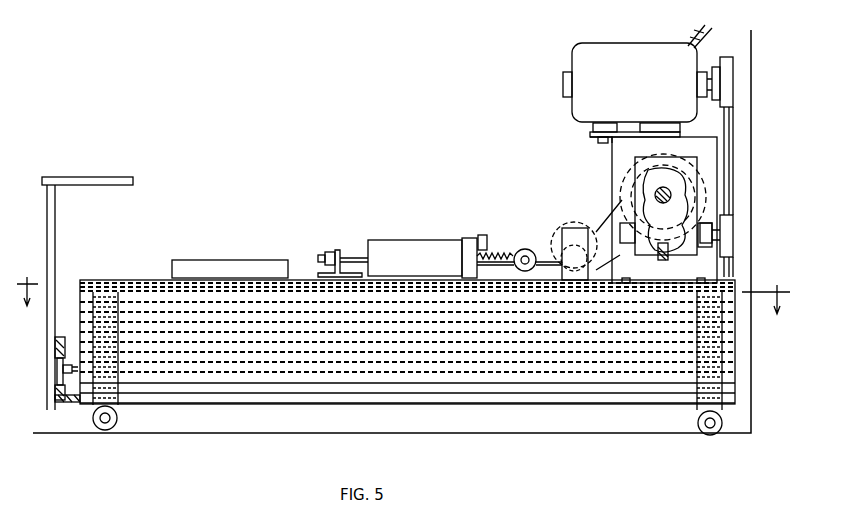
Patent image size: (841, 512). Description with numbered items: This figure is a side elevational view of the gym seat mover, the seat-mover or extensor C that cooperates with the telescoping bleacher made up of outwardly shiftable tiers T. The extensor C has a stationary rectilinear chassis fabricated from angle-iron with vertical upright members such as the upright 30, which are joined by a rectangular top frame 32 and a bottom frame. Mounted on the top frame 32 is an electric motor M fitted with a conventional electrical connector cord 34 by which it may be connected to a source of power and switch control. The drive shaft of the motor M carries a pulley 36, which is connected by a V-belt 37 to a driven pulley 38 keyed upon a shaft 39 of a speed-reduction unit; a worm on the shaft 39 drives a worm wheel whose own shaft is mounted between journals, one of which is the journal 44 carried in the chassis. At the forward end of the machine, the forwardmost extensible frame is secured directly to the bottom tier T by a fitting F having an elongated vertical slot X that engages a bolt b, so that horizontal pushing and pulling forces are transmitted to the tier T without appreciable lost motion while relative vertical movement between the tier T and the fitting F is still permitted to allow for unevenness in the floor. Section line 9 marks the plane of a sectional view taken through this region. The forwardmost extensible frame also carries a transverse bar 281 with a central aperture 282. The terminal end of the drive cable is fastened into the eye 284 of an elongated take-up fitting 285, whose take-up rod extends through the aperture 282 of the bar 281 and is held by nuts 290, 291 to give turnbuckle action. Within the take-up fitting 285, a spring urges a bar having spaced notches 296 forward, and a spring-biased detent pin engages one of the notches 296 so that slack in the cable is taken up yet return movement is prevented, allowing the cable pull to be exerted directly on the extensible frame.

The tier T is at (60, 172).
The bolt b is at (78, 328).
The section line 9- 9 is at (403, 303).
The elongated vertical slot X is at (55, 378).
The fitting F is at (66, 405).
The transverse bar 281 is at (340, 255).
The central aperture 282 is at (337, 250).
The nut 290 is at (335, 252).
The nut 291 is at (333, 256).
The take-up fitting 285 is at (395, 240).
The spaced notches 296 is at (500, 253).
The eye 284 is at (523, 250).
The electric motor M is at (572, 52).
The seat-mover or extensor C is at (508, 101).
The electrical connector cord 34 is at (700, 28).
The rectangular top frame 32 is at (592, 137).
The vertical upright member 30 is at (613, 170).
The journal 44 is at (655, 203).
The pulley 36 is at (720, 60).
The V-belt 37 is at (735, 132).
The driven pulley 38 is at (735, 198).
The shaft 39 is at (740, 240).